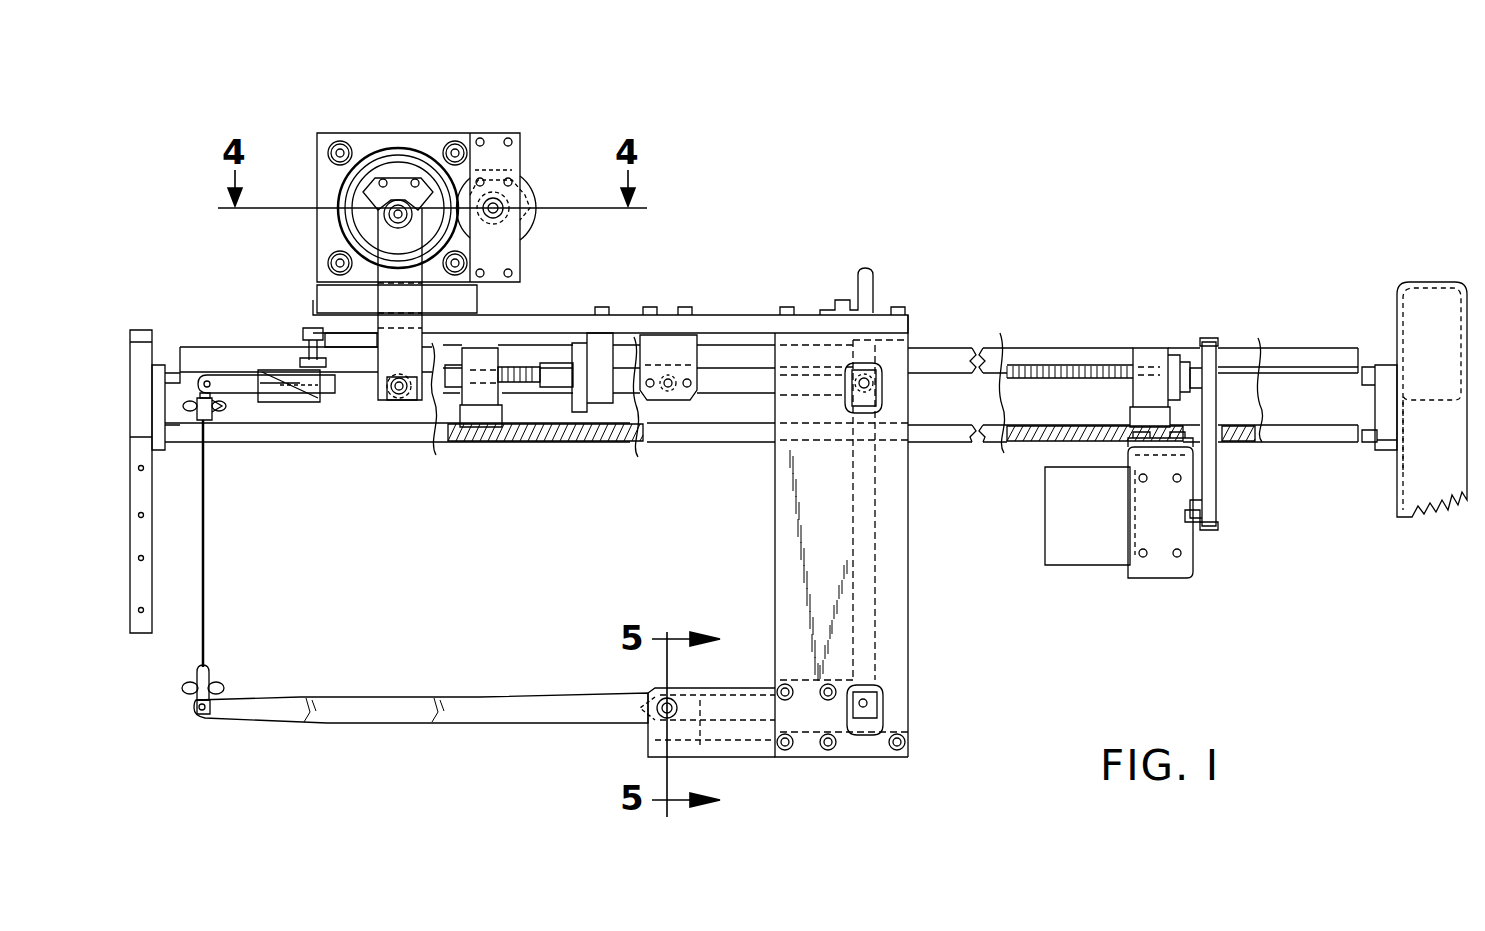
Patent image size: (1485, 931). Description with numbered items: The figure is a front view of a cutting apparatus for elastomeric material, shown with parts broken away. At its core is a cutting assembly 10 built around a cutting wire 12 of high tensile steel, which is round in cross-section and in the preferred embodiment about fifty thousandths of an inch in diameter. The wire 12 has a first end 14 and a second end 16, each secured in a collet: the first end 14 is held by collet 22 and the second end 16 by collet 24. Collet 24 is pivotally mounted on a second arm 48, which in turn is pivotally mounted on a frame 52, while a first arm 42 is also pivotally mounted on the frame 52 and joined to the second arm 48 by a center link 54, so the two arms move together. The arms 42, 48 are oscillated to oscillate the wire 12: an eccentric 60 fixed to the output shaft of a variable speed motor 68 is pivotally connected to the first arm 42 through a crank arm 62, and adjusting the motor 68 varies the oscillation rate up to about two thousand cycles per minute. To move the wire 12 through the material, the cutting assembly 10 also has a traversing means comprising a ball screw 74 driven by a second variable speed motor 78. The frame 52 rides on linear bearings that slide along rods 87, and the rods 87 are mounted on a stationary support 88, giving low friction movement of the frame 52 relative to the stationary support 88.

The cutting assembly 10 is at (968, 292).
The cutting wire 12 is at (204, 618).
The first end 14 is at (205, 425).
The second end 16 is at (209, 664).
The collet 22 is at (222, 405).
The collet 24 is at (196, 711).
The first arm 42 is at (230, 383).
The second arm 48 is at (395, 720).
The frame 52 is at (735, 745).
The center link 54 is at (868, 701).
The eccentric 60 is at (420, 200).
The crank arm 62 is at (472, 304).
The variable speed motor 68 is at (401, 150).
The ball screw 74 is at (1056, 365).
The variable speed motor 78 is at (1066, 540).
The rods 87 is at (1275, 372).
The stationary support 88 is at (145, 583).